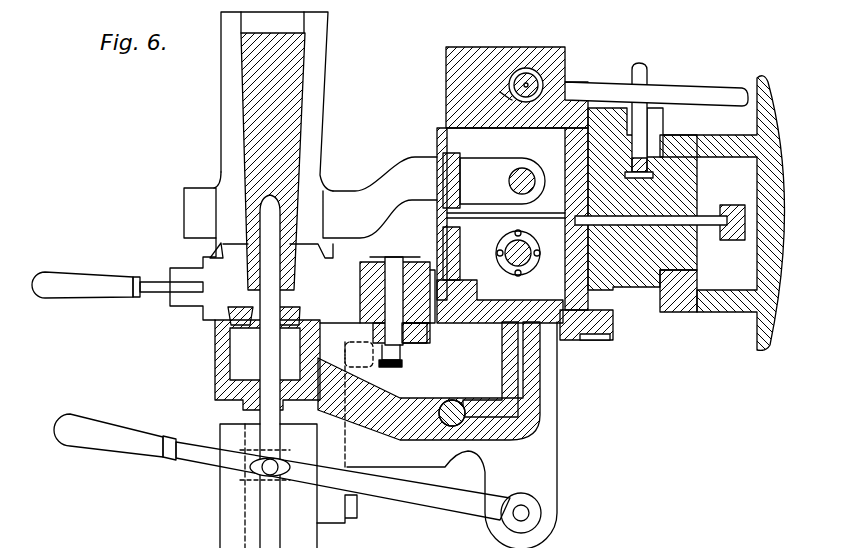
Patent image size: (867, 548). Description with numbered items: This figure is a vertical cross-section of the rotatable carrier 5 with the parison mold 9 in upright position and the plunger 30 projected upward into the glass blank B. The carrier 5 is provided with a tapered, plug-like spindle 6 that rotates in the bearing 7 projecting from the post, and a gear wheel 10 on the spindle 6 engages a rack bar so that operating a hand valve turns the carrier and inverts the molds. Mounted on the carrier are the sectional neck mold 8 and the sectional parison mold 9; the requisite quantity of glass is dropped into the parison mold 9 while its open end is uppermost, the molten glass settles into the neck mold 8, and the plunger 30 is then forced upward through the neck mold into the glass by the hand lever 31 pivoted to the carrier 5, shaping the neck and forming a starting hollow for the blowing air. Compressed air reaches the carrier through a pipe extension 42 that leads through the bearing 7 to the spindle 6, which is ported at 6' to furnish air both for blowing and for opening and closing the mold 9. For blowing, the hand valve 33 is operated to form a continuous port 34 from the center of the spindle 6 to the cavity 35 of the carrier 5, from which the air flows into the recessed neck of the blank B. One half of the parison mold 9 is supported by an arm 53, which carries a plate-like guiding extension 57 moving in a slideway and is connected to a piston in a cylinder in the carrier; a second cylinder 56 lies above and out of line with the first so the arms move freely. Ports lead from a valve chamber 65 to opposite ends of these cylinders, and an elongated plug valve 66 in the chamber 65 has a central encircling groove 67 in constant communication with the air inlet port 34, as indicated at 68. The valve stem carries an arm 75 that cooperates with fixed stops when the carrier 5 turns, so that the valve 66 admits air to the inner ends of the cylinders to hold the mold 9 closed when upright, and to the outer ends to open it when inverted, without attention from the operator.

The parison mold 9 is at (225, 108).
The blank B is at (300, 107).
The plunger 30 is at (258, 213).
The neck mold 8 is at (233, 302).
The cavity 35 is at (230, 353).
The arm 53 is at (380, 197).
The valve chamber 65 is at (452, 72).
The communication point 68 is at (512, 225).
The plug valve 66 is at (527, 72).
The central encircling groove 67 is at (505, 78).
The guiding extension 57 is at (458, 182).
The cylinder 56 is at (522, 259).
The port 6' is at (587, 211).
The bearing 7 is at (733, 302).
The spindle 6 is at (678, 304).
The gear wheel 10 is at (604, 322).
The pipe extension 42 is at (640, 62).
The valve arm 75 is at (718, 94).
The port 34 is at (522, 374).
The hand valve 33 is at (455, 402).
The carrier 5 is at (547, 422).
The hand lever 31 is at (116, 440).